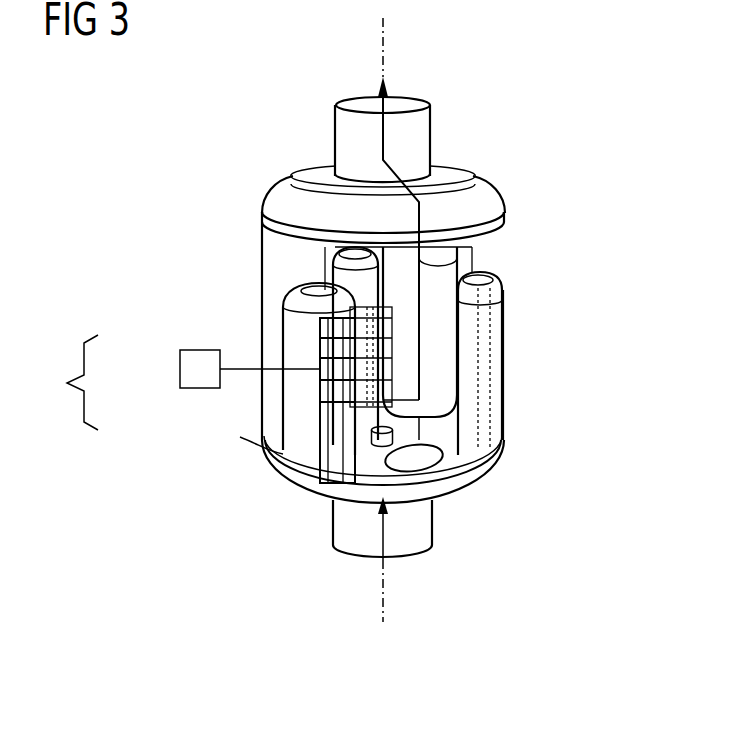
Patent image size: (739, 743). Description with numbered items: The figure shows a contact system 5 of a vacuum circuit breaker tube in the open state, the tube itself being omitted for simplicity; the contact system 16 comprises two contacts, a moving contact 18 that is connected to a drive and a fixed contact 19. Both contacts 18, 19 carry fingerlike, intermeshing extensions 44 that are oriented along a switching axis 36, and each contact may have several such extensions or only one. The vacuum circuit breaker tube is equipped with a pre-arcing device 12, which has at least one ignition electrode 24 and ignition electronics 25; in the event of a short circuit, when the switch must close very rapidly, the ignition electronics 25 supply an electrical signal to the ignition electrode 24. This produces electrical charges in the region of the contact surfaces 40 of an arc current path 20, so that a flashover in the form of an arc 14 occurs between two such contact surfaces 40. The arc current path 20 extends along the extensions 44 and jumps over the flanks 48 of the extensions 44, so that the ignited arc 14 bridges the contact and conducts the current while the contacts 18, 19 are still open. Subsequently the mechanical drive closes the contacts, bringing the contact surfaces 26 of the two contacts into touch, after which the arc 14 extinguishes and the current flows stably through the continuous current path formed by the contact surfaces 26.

The contact system 5 is at (560, 200).
The pre-arcing device 12 is at (67, 382).
The arc 14 is at (370, 348).
The contact system 16 is at (560, 282).
The moving contact 18 is at (504, 428).
The fixed contact 19 is at (322, 172).
The arc current path 20 is at (424, 262).
The ignition electrode 24 is at (240, 437).
The ignition electronics 25 is at (180, 369).
The contact surfaces 26 is at (425, 424).
The switching axis 36 is at (384, 30).
The contact surface of arc current path 40 is at (350, 437).
The fingerlike extensions 44 is at (498, 317).
The flanks 48 is at (468, 338).